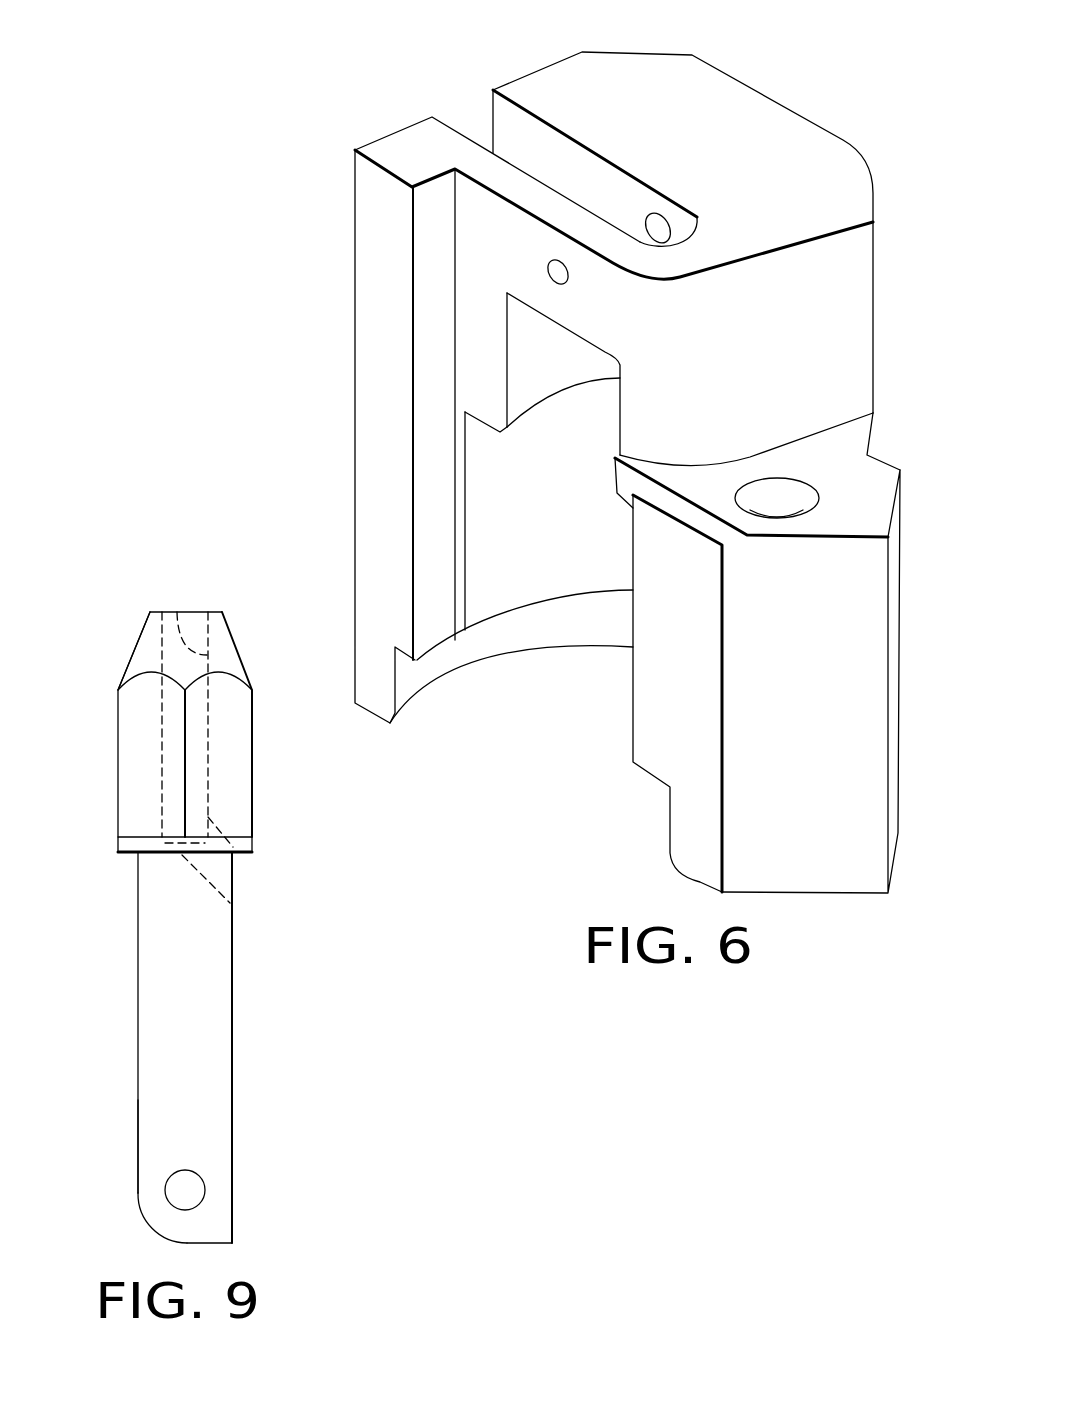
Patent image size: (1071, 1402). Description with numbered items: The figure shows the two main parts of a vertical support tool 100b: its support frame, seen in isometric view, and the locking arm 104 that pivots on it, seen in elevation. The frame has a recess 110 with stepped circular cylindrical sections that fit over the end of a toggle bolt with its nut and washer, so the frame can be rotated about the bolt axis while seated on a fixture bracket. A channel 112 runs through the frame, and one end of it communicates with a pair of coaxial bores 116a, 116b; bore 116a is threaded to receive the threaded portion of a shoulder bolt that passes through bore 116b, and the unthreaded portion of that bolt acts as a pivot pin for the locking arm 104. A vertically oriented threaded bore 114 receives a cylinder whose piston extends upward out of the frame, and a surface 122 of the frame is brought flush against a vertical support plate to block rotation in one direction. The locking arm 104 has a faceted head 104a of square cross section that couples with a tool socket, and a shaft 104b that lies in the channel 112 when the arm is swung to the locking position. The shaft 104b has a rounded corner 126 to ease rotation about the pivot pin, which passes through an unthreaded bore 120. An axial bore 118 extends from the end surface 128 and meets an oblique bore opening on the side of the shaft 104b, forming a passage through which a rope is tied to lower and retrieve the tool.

In FIG. 6, the vertical support tool 100b is at (745, 65).
In FIG. 6, the channel 112 is at (470, 108).
In FIG. 9, the channel 112 is at (233, 887).
In FIG. 6, the threaded bore 116a is at (567, 283).
In FIG. 6, the bore 116b is at (648, 215).
In FIG. 6, the threaded bore 114 is at (787, 492).
In FIG. 6, the surface 122 is at (767, 697).
In FIG. 6, the recess 110 is at (517, 680).
In FIG. 9, the locking arm 104 is at (153, 1010).
In FIG. 9, the head 104a is at (132, 750).
In FIG. 9, the shaft 104b is at (157, 1110).
In FIG. 9, the end surface 128 is at (147, 620).
In FIG. 9, the axial bore 118 is at (178, 612).
In FIG. 9, the unthreaded bore 120 is at (172, 1188).
In FIG. 9, the rounded corner 126 is at (148, 1223).